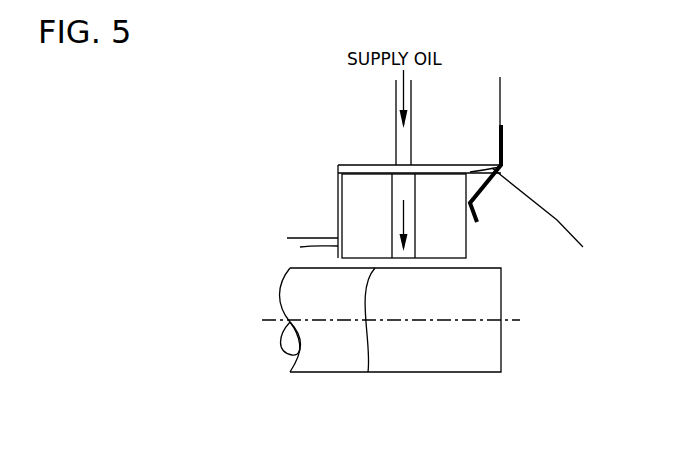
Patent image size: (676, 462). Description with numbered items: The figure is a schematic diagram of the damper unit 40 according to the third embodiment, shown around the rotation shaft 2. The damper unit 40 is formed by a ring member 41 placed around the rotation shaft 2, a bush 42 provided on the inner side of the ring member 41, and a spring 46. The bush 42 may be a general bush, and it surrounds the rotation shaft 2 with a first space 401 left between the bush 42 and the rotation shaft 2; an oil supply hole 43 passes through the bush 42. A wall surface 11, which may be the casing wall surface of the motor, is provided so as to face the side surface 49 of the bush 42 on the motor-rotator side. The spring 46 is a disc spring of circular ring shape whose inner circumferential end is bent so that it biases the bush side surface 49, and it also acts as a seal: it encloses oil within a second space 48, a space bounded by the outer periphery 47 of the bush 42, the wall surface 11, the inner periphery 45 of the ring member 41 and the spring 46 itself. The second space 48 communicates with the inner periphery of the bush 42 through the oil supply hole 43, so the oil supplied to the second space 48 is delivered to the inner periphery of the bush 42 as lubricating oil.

The rotation shaft 2 is at (445, 362).
The first space 401 is at (368, 372).
The wall surface 11 is at (337, 213).
The damper unit 40 is at (437, 148).
The ring member 41 is at (485, 93).
The bush 42 is at (447, 237).
The oil supply hole 43 is at (401, 188).
The inner periphery 45 is at (336, 168).
The spring 46 is at (508, 150).
The outer periphery 47 is at (583, 247).
The second space 48 is at (477, 170).
The side surface 49 is at (300, 247).